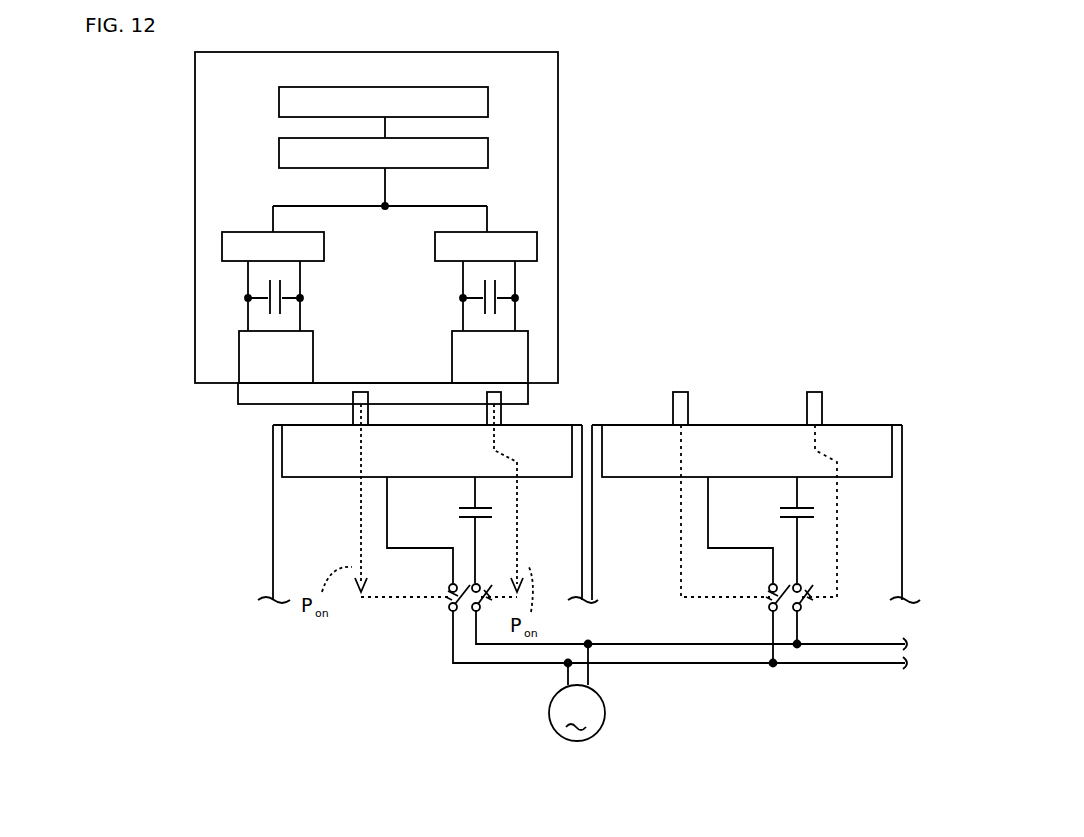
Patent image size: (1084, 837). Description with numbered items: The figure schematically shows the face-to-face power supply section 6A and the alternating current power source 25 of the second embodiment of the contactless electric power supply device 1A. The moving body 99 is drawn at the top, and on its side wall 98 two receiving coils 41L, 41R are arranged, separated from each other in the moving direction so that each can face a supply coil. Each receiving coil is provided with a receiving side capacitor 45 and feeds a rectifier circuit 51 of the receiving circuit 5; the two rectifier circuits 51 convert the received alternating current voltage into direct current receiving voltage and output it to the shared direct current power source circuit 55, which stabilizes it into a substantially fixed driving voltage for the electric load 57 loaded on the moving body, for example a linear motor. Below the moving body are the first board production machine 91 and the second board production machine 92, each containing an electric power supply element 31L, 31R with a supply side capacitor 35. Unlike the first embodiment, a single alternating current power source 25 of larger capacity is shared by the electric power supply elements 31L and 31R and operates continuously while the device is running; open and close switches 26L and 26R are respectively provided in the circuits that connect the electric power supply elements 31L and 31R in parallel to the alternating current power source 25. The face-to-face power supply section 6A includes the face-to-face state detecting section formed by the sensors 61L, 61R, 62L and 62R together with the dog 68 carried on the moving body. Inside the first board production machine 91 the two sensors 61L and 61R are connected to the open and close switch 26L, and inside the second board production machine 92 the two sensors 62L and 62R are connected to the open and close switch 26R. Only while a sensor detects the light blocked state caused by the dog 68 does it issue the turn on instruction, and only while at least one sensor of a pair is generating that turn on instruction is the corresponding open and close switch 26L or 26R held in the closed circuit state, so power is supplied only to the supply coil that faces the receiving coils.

The contactless electric power supply device 1A is at (612, 188).
The receiving circuit 5 is at (246, 186).
The face-to-face power supply section 6A is at (232, 413).
The alternating current power source 25 is at (605, 712).
The open and close switch 26L is at (450, 597).
The open and close switch 26R is at (806, 610).
The electric power supply element 31L is at (446, 468).
The electric power supply element 31R is at (767, 468).
The supply side capacitor 35 is at (495, 515).
The receiving coil 41L is at (293, 367).
The receiving coil 41R is at (508, 367).
The receiving side capacitor 45 is at (270, 282).
The rectifier circuit 51 is at (285, 257).
The direct current power source circuit 55 is at (397, 163).
The electric load 57 is at (397, 112).
The sensor 61L is at (353, 412).
The sensor 61R is at (505, 410).
The sensor 62L is at (690, 405).
The sensor 62R is at (824, 405).
The dog 68 is at (232, 401).
The first board production machine 91 is at (564, 589).
The second board production machine 92 is at (874, 589).
The side wall 98 is at (235, 392).
The moving body 99 is at (213, 87).